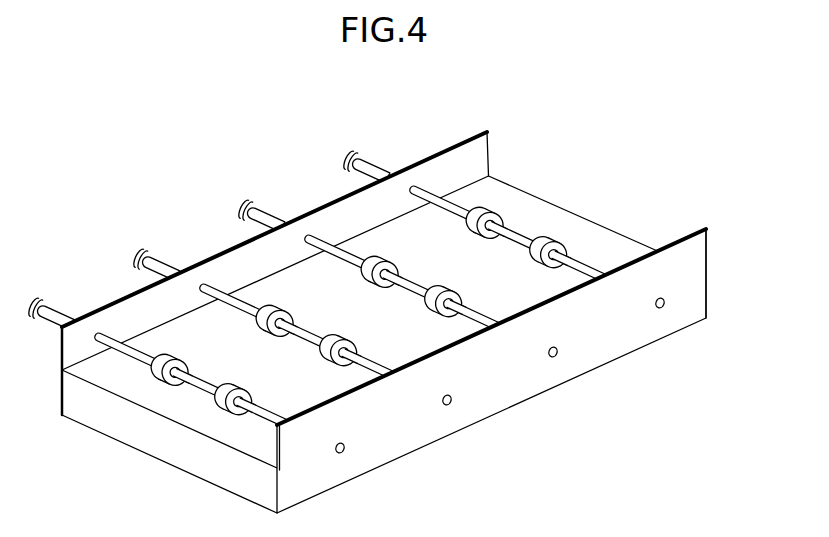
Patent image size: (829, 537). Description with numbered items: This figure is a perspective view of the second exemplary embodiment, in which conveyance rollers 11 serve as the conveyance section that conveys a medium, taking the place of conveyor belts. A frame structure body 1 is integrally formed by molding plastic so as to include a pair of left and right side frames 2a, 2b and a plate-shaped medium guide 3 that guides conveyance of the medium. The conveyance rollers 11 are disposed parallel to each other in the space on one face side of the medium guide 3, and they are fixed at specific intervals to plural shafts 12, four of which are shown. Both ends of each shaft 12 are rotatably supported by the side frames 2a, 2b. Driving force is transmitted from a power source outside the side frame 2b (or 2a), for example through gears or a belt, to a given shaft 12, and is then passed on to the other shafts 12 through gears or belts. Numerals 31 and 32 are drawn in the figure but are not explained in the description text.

The frame structure body 1 is at (414, 299).
The side frame 2a is at (545, 391).
The side frame 2b is at (459, 163).
The medium guide 3 is at (582, 229).
The conveyance roller 11 is at (487, 210).
The shaft 12 is at (43, 303).
The front plate end portion 31 is at (708, 275).
The roller shaft 32 is at (583, 261).